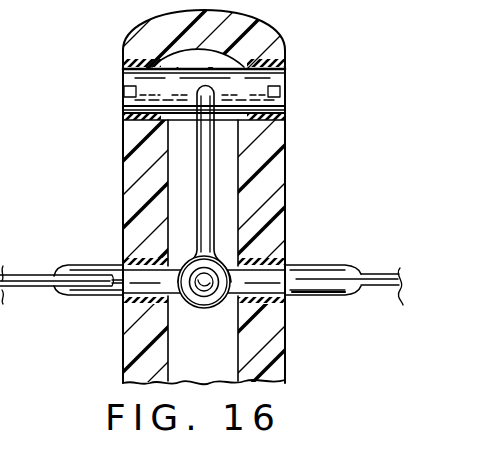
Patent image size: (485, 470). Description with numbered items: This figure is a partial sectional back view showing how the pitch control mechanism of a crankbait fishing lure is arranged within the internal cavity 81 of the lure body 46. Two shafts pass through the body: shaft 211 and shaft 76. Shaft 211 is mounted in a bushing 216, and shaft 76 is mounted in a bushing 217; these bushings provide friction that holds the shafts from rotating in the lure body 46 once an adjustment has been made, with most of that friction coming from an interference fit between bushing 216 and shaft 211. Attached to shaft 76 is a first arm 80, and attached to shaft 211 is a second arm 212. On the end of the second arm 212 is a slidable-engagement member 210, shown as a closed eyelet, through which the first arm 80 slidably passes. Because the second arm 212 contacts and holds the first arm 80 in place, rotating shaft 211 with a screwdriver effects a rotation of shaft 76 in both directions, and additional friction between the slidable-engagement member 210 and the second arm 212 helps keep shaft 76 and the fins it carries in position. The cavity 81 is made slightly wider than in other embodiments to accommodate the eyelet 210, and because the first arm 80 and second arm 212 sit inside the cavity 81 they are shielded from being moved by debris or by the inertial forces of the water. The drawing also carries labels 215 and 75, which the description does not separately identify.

The lure body 46 is at (285, 192).
The valve assembly 75 is at (391, 170).
The shaft 76 is at (293, 265).
The first arm 80 is at (178, 256).
The internal cavity 81 is at (189, 158).
The slidable-engagement member 210 is at (212, 308).
The shaft 211 is at (285, 73).
The second arm 212 is at (217, 167).
The seal 215 is at (123, 107).
The bushing 216 is at (123, 61).
The bushing 217 is at (117, 300).